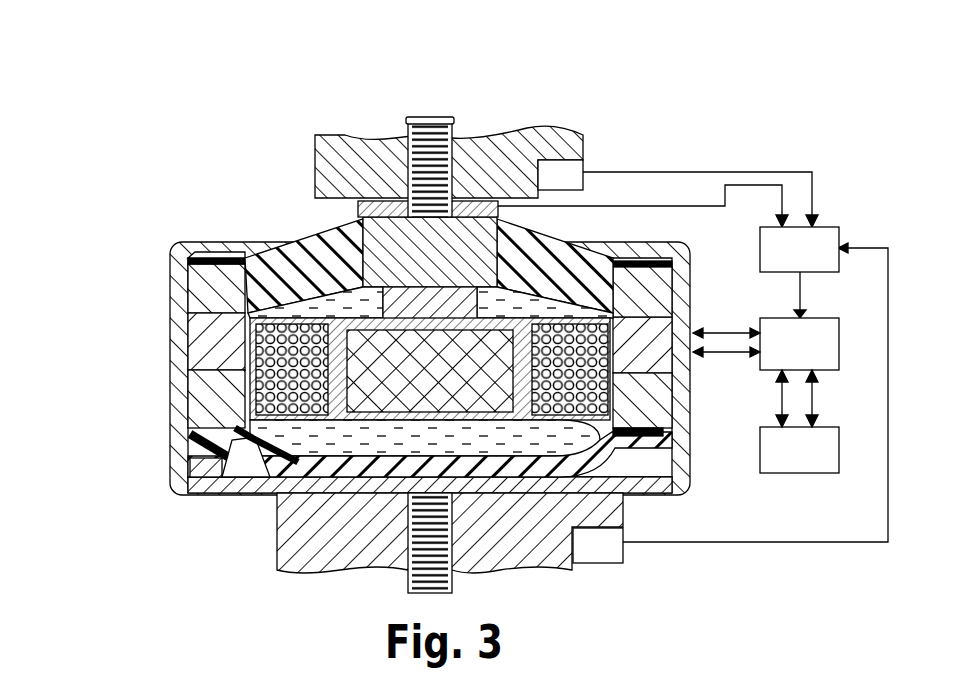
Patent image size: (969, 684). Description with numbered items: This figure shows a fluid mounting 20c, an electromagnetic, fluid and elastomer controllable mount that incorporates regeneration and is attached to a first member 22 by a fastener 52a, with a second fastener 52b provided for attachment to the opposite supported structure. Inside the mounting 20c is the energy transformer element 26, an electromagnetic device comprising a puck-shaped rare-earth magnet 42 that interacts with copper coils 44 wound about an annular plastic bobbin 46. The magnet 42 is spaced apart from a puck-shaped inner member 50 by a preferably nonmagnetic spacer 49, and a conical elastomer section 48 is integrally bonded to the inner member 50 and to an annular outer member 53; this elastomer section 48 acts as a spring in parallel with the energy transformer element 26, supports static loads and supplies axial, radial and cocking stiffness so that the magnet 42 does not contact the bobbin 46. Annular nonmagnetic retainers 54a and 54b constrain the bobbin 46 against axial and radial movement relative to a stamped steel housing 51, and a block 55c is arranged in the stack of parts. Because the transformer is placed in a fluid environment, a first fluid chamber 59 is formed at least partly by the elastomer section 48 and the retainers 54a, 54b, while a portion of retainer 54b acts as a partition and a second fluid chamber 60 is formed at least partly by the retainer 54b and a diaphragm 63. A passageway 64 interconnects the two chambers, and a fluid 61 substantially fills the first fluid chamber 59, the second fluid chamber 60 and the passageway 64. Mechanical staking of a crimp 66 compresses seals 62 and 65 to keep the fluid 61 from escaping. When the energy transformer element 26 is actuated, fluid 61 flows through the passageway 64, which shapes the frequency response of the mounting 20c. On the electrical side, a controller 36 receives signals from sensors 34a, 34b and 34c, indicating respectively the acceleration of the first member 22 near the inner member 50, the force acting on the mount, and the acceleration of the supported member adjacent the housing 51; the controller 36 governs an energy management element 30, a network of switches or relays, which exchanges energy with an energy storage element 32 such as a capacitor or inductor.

The fluid mounting 20c is at (467, 335).
The first member 22 is at (477, 185).
The energy transformer element 26 is at (278, 539).
The energy management element 30 is at (787, 358).
The energy storage element 32 is at (787, 461).
The sensor 34a is at (577, 187).
The sensor 34b is at (358, 207).
The sensor 34c is at (581, 557).
The controller 36 is at (787, 261).
The magnet 42 is at (419, 388).
The coils 44 is at (312, 398).
The bobbin 46 is at (402, 443).
The elastomer section 48 is at (291, 280).
The spacer 49 is at (417, 323).
The inner member 50 is at (417, 265).
The housing 51 is at (172, 402).
The fastener 52a is at (432, 117).
The fastener 52b is at (404, 586).
The outer member 53 is at (170, 280).
The retainer 54a is at (172, 322).
The retainer 54b is at (172, 370).
The bottom plate 55c is at (172, 463).
The first fluid chamber 59 is at (430, 302).
The second fluid chamber 60 is at (497, 456).
The fluid 61 is at (226, 490).
The seal 62 is at (172, 437).
The diaphragm 63 is at (253, 478).
The passageway 64 is at (437, 433).
The seal 65 is at (207, 258).
The crimp 66 is at (205, 250).